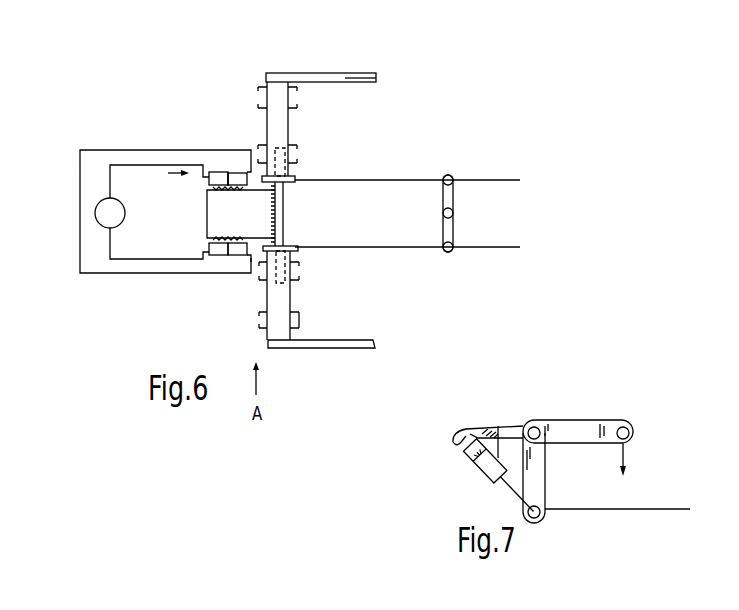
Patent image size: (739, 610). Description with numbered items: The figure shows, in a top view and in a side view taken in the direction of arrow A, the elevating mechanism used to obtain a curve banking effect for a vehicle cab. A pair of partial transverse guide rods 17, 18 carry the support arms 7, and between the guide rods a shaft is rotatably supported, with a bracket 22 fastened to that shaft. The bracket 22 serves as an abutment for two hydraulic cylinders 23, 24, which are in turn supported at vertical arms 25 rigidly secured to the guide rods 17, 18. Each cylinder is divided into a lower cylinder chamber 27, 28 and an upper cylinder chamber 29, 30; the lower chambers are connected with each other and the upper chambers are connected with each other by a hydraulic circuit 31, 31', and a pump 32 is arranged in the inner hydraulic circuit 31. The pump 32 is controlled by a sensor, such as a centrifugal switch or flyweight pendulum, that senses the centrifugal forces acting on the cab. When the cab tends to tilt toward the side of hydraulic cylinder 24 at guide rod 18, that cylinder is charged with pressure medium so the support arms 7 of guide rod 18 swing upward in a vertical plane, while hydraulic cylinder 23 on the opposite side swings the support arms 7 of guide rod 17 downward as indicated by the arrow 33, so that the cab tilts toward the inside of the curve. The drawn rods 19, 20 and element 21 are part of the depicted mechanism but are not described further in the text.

In FIG. 6, the support arm 7 is at (347, 73).
In FIG. 7, the support arm 7 is at (588, 421).
In FIG. 6, the partial transverse guide rod 17 is at (283, 297).
In FIG. 6, the partial transverse guide rod 18 is at (287, 122).
In FIG. 6, the upper rod 19 is at (373, 180).
In FIG. 6, the lower rod 20 is at (392, 247).
In FIG. 6, the splined shaft / link 21 is at (285, 217).
In FIG. 6, the bracket 22 is at (220, 213).
In FIG. 7, the bracket 22 is at (503, 425).
In FIG. 6, the hydraulic cylinder 23 is at (233, 255).
In FIG. 7, the hydraulic cylinder 23 is at (490, 480).
In FIG. 6, the hydraulic cylinder 24 is at (229, 173).
In FIG. 7, the vertical arm 25 is at (540, 477).
In FIG. 6, the lower cylinder chamber 27 is at (215, 172).
In FIG. 6, the lower cylinder chamber 28 is at (213, 255).
In FIG. 6, the upper cylinder chamber 29 is at (237, 173).
In FIG. 6, the upper cylinder chamber 30 is at (243, 256).
In FIG. 6, the inner hydraulic circuit 31 is at (165, 194).
In FIG. 6, the hydraulic circuit 31' is at (159, 243).
In FIG. 6, the pump 32 is at (95, 213).
In FIG. 7, the arrow 33 is at (627, 447).